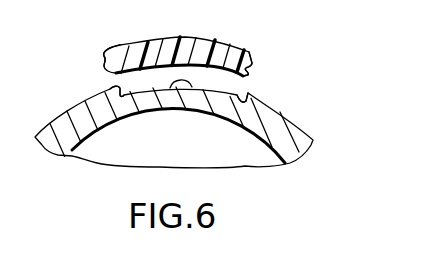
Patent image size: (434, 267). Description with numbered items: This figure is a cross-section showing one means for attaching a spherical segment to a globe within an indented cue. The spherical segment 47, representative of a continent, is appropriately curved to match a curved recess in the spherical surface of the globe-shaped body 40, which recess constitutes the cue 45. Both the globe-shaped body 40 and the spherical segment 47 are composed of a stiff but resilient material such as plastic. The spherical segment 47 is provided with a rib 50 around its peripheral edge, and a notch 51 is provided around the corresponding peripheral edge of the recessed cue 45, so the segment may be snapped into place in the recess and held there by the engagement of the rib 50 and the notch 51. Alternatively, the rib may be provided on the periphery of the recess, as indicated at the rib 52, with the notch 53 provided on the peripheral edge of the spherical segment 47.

The globe-shaped body 40 is at (298, 132).
The cue 45 is at (177, 90).
The spherical segment 47 is at (198, 44).
The rib 50 is at (105, 62).
The notch 51 is at (115, 93).
The rib 52 is at (243, 89).
The notch 53 is at (250, 72).